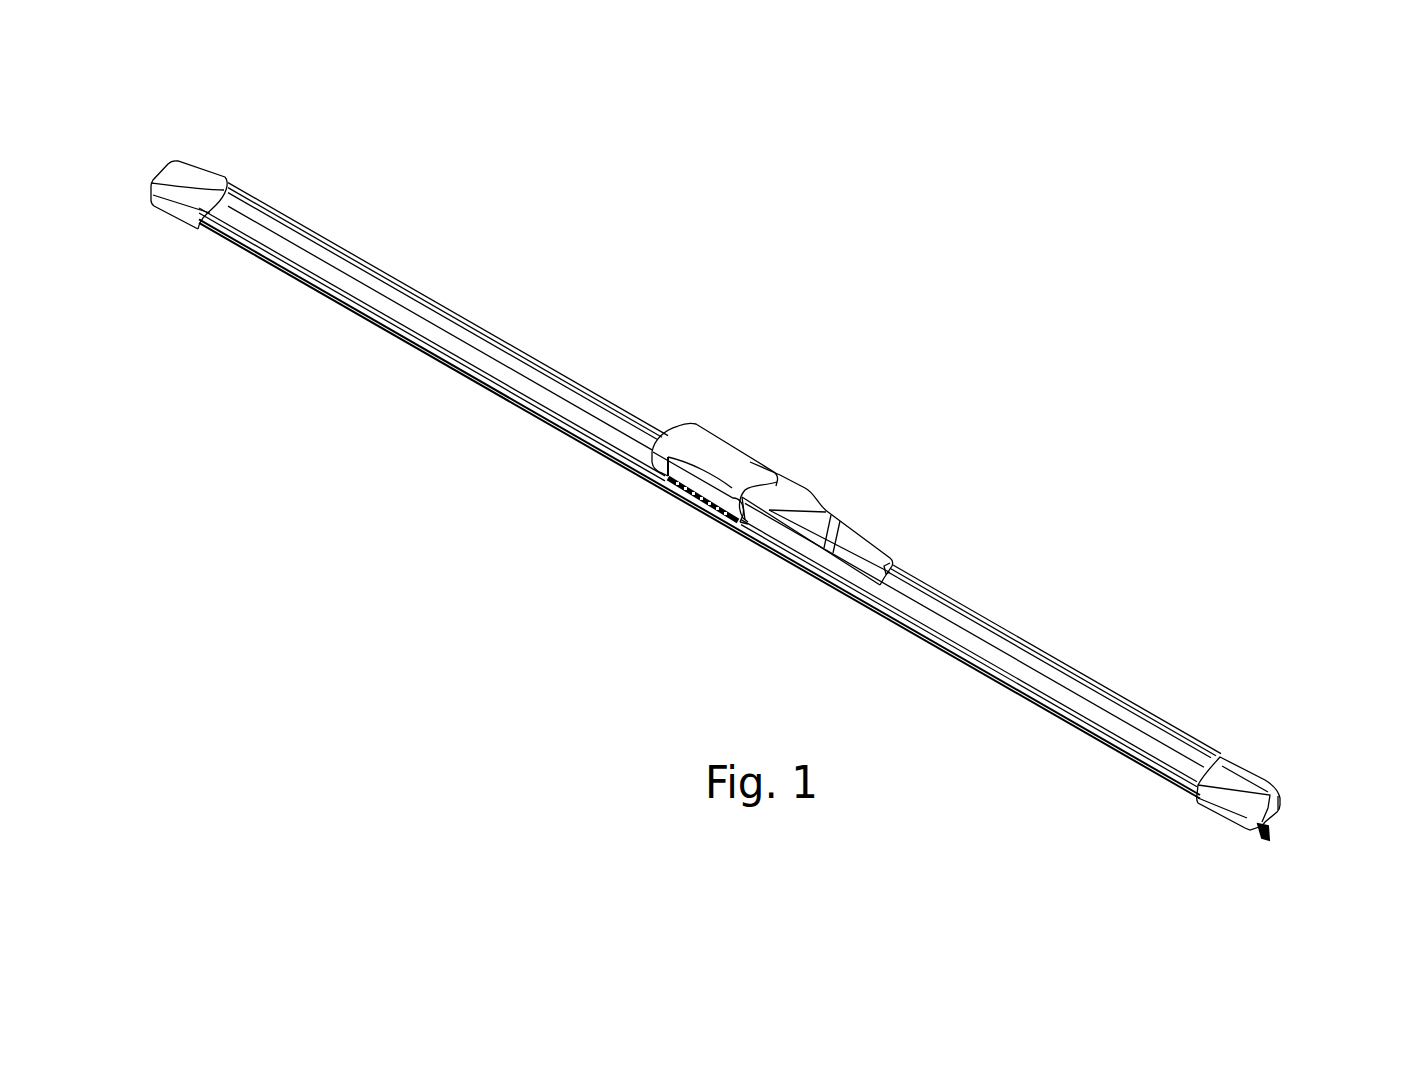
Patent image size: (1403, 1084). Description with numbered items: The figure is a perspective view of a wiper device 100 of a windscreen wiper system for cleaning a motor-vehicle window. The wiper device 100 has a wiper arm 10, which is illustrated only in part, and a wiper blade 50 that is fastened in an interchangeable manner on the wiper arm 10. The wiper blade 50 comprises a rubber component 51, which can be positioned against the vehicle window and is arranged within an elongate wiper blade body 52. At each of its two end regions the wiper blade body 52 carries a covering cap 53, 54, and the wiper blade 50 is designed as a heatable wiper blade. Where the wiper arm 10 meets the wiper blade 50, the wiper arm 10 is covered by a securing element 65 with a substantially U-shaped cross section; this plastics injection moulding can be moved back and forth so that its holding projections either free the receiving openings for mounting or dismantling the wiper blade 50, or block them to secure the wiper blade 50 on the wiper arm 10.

The wiper device 100 is at (637, 563).
The wiper arm 10 is at (880, 537).
The wiper blade 50 is at (463, 313).
The wiper blade body 52 is at (1058, 678).
The rubber component 51 is at (1268, 832).
The covering cap 53 is at (195, 182).
The covering cap 54 is at (1242, 784).
The securing element 65 is at (735, 443).